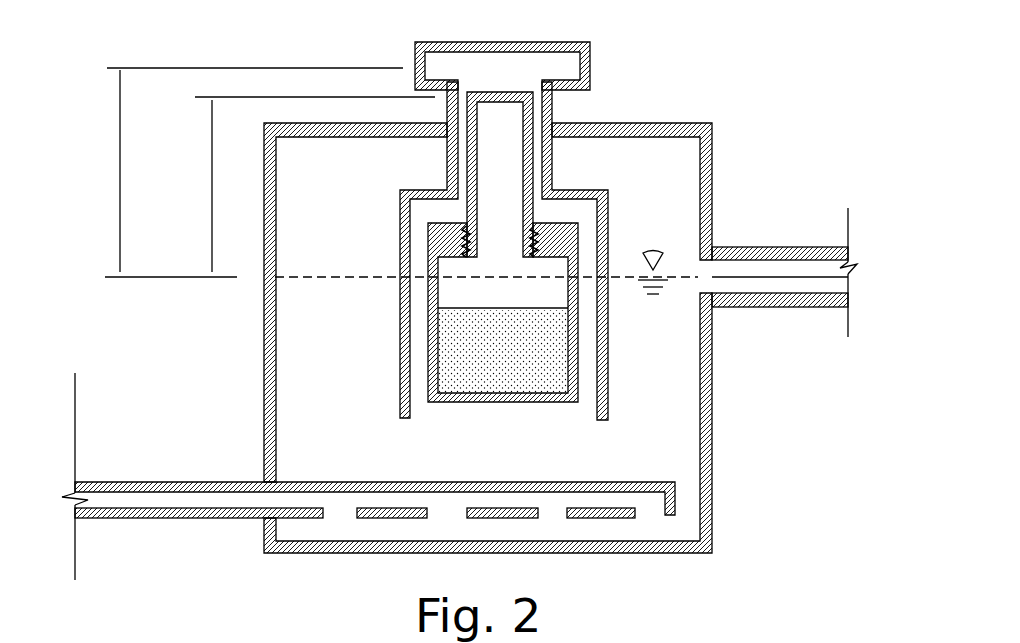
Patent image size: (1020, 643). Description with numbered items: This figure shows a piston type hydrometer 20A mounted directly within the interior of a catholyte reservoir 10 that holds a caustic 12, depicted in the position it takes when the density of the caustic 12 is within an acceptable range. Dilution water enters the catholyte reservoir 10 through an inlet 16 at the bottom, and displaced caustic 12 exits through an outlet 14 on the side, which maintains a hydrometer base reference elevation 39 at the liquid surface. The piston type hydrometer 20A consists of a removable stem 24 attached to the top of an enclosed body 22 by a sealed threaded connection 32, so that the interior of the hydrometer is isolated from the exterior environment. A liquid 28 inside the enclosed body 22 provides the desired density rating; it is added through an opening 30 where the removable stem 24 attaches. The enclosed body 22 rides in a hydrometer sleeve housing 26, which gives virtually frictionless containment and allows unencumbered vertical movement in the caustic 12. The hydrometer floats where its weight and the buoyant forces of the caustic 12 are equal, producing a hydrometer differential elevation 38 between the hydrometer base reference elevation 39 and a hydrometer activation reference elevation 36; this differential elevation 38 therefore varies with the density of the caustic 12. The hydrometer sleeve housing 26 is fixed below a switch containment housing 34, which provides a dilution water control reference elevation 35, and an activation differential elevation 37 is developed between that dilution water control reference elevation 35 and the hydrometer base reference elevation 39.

The catholyte reservoir 10 is at (264, 420).
The caustic 12 is at (355, 398).
The outlet 14 is at (758, 245).
The inlet 16 is at (675, 503).
The piston type hydrometer 20A is at (535, 128).
The enclosed body 22 is at (572, 322).
The removable stem 24 is at (533, 165).
The hydrometer sleeve housing 26 is at (607, 365).
The liquid 28 is at (520, 368).
The opening 30 is at (502, 235).
The sealed threaded connection 32 is at (536, 228).
The switch containment housing 34 is at (412, 48).
The dilution water control reference elevation 35 is at (225, 75).
The hydrometer activation reference elevation 36 is at (287, 104).
The activation differential elevation 37 is at (123, 185).
The hydrometer differential elevation 38 is at (215, 208).
The hydrometer base reference elevation 39 is at (142, 283).